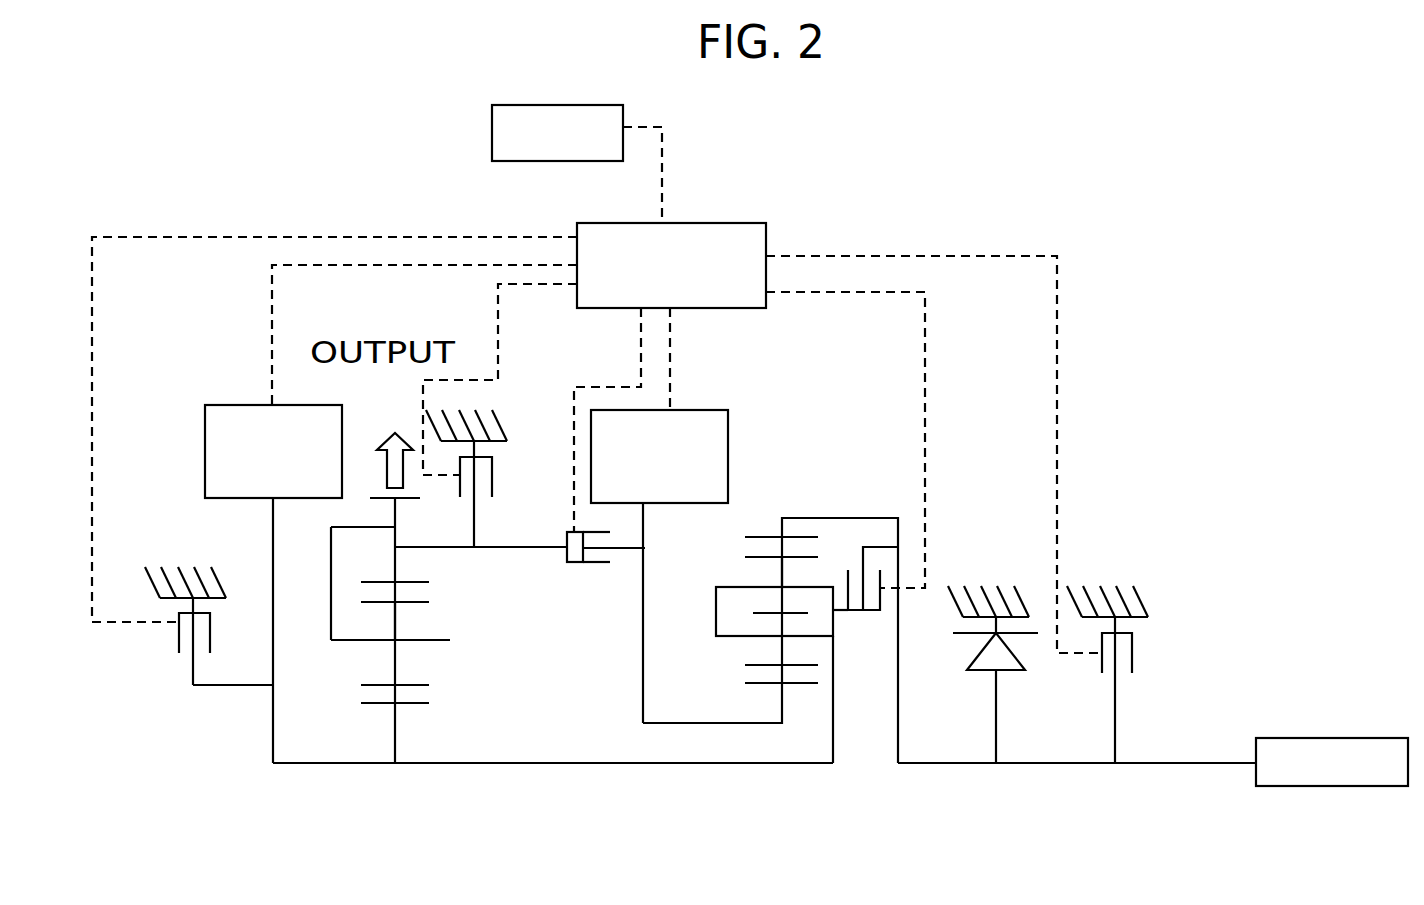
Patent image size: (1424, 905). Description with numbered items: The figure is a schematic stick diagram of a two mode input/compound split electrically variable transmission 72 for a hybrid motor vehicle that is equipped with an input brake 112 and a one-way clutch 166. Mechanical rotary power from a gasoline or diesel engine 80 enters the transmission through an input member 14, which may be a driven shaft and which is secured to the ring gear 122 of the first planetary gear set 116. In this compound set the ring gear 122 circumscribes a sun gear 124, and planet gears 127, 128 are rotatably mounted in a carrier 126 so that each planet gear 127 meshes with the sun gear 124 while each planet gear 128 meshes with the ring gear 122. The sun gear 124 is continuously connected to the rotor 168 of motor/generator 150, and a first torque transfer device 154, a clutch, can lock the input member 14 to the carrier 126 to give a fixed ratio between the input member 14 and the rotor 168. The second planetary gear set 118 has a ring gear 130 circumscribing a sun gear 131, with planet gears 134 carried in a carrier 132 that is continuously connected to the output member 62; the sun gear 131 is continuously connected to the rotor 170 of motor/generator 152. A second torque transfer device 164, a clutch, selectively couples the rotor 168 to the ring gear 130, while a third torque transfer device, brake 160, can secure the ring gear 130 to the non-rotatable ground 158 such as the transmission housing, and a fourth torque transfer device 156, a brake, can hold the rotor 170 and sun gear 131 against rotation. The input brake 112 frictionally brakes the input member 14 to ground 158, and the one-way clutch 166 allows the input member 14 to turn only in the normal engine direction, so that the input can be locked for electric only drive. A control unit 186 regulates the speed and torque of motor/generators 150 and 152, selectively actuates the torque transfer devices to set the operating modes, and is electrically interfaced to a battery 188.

The input member 14 is at (1178, 763).
The output member 62 is at (330, 577).
The electrically variable transmission 72 is at (339, 880).
The engine 80 is at (1340, 786).
The input brake 112 is at (1132, 648).
The first planetary gear set 116 is at (777, 601).
The second planetary gear set 118 is at (438, 660).
The ring gear 122 is at (757, 537).
The sun gear 124 is at (768, 685).
The carrier 126 is at (733, 635).
The planet gear 127 is at (777, 645).
The planet gear 128 is at (780, 568).
The ring gear 130 is at (408, 575).
The sun gear 131 is at (408, 703).
The carrier 132 is at (363, 642).
The planet gear 134 is at (395, 618).
The motor/generator 150 is at (728, 447).
The motor/generator 152 is at (205, 450).
The first torque transfer device 154 is at (855, 612).
The fourth torque transfer device 156 is at (180, 617).
The ground 158 is at (222, 567).
The third torque transfer device 160 is at (550, 440).
The second torque transfer device 164 is at (574, 562).
The one-way clutch 166 is at (970, 652).
The rotor 168 is at (645, 530).
The rotor 170 is at (277, 580).
The control unit 186 is at (705, 223).
The battery 188 is at (526, 147).